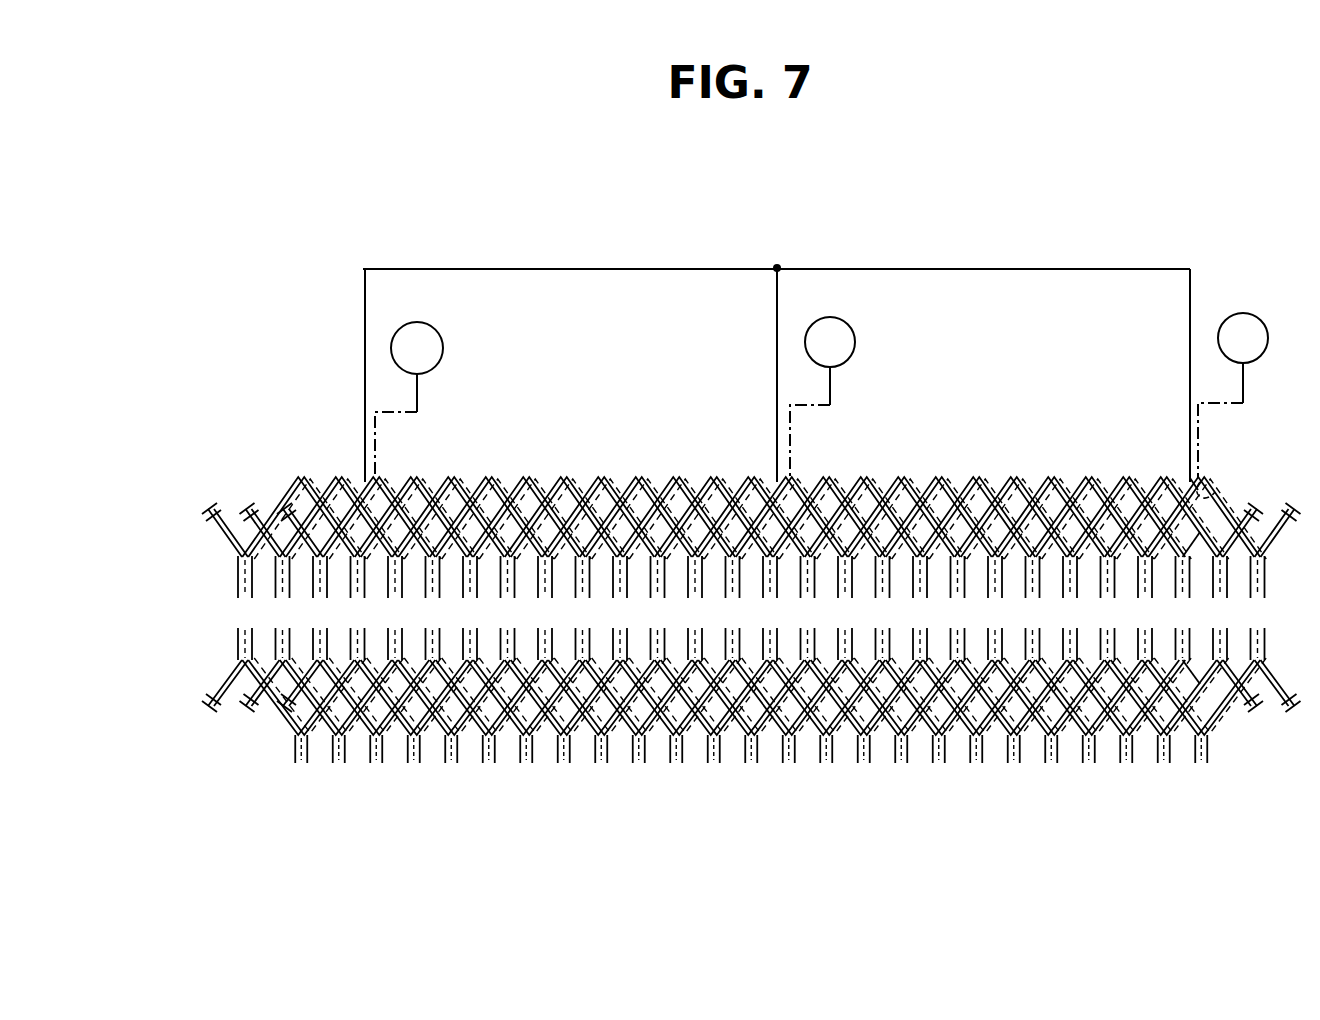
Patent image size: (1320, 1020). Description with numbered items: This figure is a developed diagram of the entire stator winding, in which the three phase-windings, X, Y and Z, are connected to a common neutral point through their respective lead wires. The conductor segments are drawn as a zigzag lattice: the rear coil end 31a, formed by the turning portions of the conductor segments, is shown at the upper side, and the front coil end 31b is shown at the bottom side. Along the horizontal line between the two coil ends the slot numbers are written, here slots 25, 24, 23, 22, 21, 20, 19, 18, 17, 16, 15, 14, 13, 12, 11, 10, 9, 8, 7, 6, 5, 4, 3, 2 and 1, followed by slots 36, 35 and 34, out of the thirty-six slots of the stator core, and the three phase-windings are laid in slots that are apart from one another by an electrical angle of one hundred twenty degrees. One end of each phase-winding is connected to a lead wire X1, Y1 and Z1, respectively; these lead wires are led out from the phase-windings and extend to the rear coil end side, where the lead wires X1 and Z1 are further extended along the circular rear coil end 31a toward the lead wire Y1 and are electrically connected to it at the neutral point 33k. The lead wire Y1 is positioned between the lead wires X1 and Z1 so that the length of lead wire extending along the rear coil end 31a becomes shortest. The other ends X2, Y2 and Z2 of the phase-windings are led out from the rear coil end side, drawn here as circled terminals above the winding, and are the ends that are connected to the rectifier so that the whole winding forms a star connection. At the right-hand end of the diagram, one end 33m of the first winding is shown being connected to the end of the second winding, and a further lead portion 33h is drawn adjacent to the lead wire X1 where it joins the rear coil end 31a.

The rear coil end 31a is at (210, 478).
The front coil end 31b is at (212, 665).
The neutral point 33k is at (778, 266).
The lead wire portion 33h is at (1184, 470).
The one end of the first winding 33m is at (1214, 496).
The lead wire Z1 is at (479, 270).
The lead wire Y1 is at (778, 298).
The lead wire X1 is at (1034, 270).
The other end of the Z-phase-winding Z2 is at (409, 400).
The other end of the Y-phase-winding Y2 is at (822, 397).
The other end of the X-phase-winding X2 is at (1233, 395).
The slot number 1 is at (1145, 608).
The slot number 2 is at (1108, 608).
The slot number 3 is at (1070, 608).
The slot number 4 is at (1033, 608).
The slot number 5 is at (995, 608).
The slot number 6 is at (958, 608).
The slot number 7 is at (920, 608).
The slot number 8 is at (883, 608).
The slot number 9 is at (845, 608).
The slot number 10 is at (807, 608).
The slot number 11 is at (770, 608).
The slot number 12 is at (732, 608).
The slot number 13 is at (695, 608).
The slot number 14 is at (657, 608).
The slot number 15 is at (620, 608).
The slot number 16 is at (582, 608).
The slot number 17 is at (545, 608).
The slot number 18 is at (507, 608).
The slot number 19 is at (470, 608).
The slot number 20 is at (432, 608).
The slot number 21 is at (395, 608).
The slot number 22 is at (357, 608).
The slot number 23 is at (320, 608).
The slot number 24 is at (282, 608).
The slot number 25 is at (245, 608).
The slot number 34 is at (1257, 608).
The slot number 35 is at (1220, 608).
The slot number 36 is at (1182, 608).